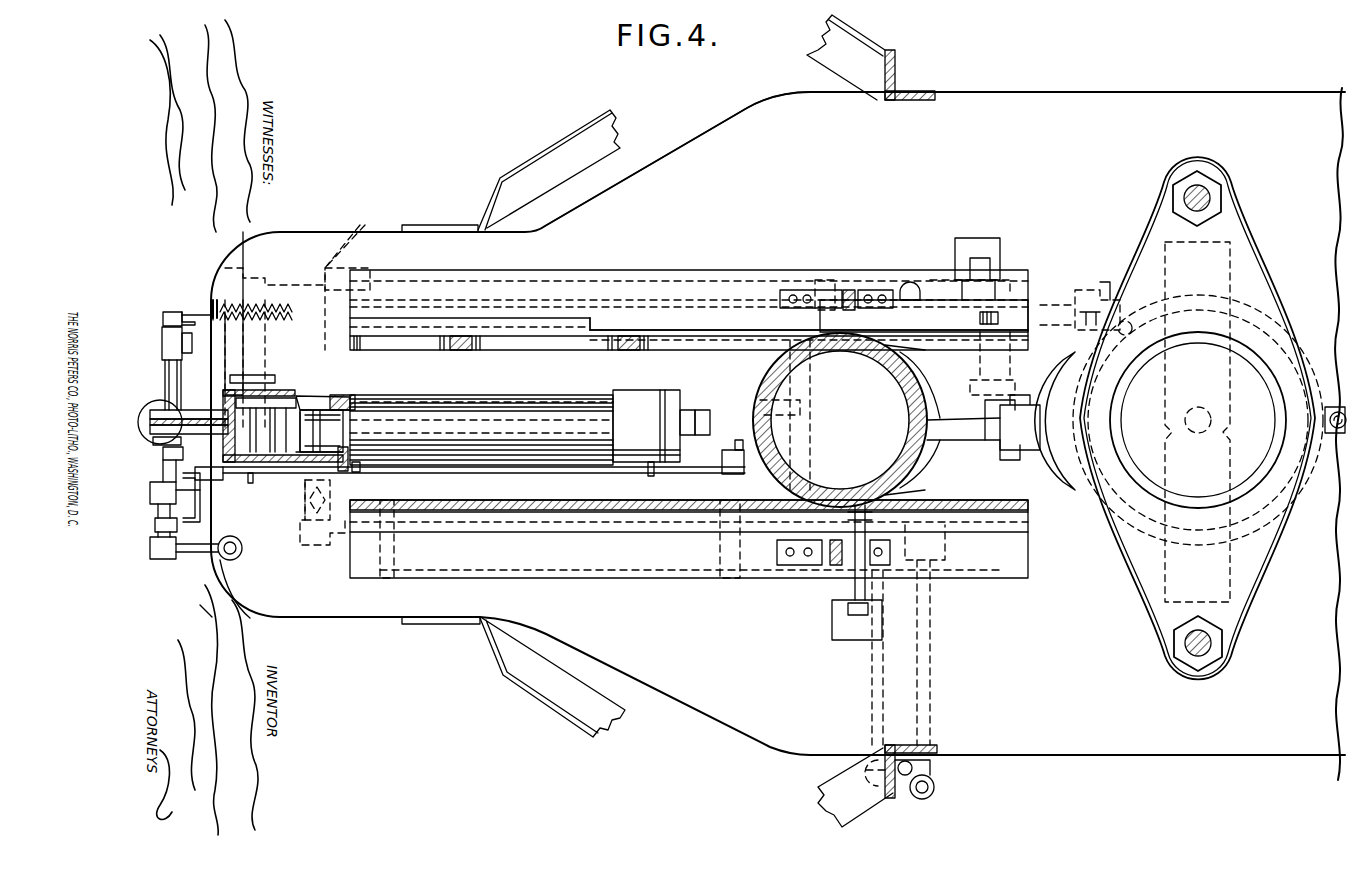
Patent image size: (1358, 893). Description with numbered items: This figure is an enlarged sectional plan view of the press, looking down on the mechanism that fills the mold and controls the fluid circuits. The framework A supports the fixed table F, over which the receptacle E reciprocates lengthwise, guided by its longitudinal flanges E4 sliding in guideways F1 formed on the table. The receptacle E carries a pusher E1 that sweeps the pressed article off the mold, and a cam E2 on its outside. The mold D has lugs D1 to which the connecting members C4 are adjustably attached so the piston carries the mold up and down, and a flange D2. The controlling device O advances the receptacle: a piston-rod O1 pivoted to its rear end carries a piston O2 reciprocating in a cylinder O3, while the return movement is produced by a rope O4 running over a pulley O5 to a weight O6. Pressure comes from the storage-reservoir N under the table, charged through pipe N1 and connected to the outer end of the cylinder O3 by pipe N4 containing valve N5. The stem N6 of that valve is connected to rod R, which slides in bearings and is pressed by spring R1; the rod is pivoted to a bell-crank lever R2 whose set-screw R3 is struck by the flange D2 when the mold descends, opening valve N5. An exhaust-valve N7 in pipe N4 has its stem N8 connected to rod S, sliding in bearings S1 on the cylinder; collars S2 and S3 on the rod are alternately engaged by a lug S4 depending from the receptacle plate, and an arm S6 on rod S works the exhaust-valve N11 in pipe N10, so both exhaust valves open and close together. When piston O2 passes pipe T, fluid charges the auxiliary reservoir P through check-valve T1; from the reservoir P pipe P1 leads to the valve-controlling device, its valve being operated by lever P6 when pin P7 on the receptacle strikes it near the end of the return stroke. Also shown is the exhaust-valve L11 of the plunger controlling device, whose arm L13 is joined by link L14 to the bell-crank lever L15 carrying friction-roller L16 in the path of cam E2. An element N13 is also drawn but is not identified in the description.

The framework A is at (895, 63).
The fixed table F is at (772, 90).
The guideways F1 is at (592, 318).
The receptacle E is at (758, 384).
The pusher E1 is at (1065, 482).
The cam E2 is at (705, 290).
The longitudinally-extending flanges E4 is at (563, 345).
The controlling device O is at (512, 418).
The piston-rod O1 is at (318, 412).
The piston O2 is at (280, 396).
The cylinder O3 is at (460, 402).
The rope O4 is at (223, 398).
The pulley O5 is at (153, 410).
The weight O6 is at (155, 440).
The storage-reservoir N is at (150, 492).
The pipe N1 is at (910, 780).
The pipe N4 is at (203, 415).
The valve N5 is at (163, 342).
The valve stem N6 is at (165, 314).
The exhaust-valve N7 is at (871, 682).
The valve stem N8 is at (183, 455).
The pipe N10 is at (183, 556).
The exhaust-valve N11 is at (160, 550).
The nut N13 is at (157, 528).
The rod R is at (213, 300).
The spring R1 is at (230, 305).
The bell-crank lever R2 is at (1090, 292).
The set-screw R3 is at (1128, 322).
The rod S is at (240, 475).
The bearings S1 is at (252, 476).
The collar S2 is at (343, 471).
The collar S3 is at (728, 474).
The lug S4 is at (362, 470).
The arm S6 is at (200, 520).
The pipe T is at (300, 545).
The check-valve T1 is at (306, 494).
The auxiliary storage-reservoir P is at (689, 539).
The pipe P1 is at (932, 600).
The lever P6 is at (843, 590).
The pin P7 is at (895, 520).
The exhaust-valve L11 is at (1002, 455).
The arm L13 is at (1010, 290).
The link L14 is at (910, 288).
The bell-crank lever L15 is at (938, 298).
The friction-roller L16 is at (985, 326).
The connecting members C4 is at (1210, 198).
The mold D is at (1258, 372).
The lugs D1 is at (1238, 222).
The flange D2 is at (1152, 315).